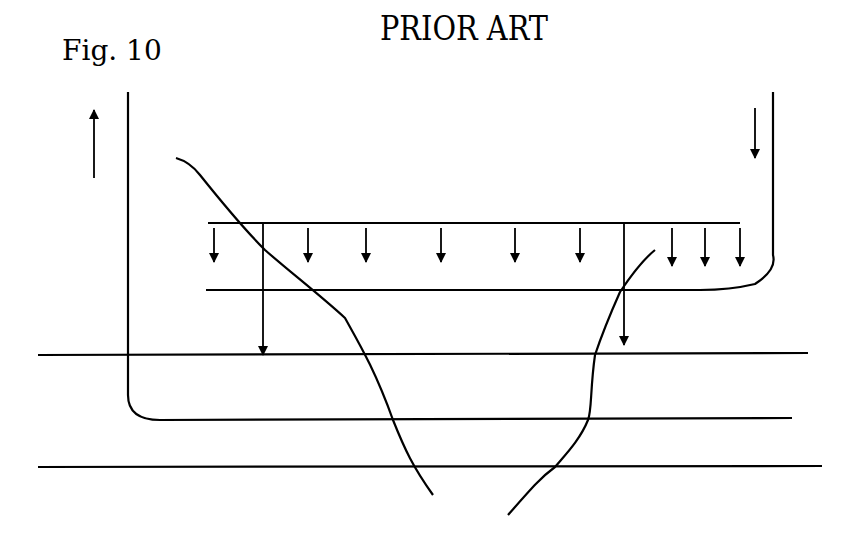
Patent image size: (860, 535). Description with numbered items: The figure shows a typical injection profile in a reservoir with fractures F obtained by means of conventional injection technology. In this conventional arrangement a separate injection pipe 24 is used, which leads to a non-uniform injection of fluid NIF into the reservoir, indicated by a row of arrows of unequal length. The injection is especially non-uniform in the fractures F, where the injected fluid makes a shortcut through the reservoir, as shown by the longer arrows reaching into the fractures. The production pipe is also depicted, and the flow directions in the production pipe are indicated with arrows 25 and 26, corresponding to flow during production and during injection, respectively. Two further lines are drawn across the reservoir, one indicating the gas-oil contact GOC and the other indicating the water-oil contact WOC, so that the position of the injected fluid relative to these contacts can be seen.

The separate injection pipe 24 is at (773, 122).
The arrow indicating flow direction in production pipe during production 25 is at (739, 151).
The arrow indicating flow direction in production pipe during injection 26 is at (69, 144).
The fractures F is at (415, 336).
The gas-oil contact GOC is at (423, 341).
The water-oil contact WOC is at (430, 454).
The non-uniform injection of fluid NIF is at (484, 216).